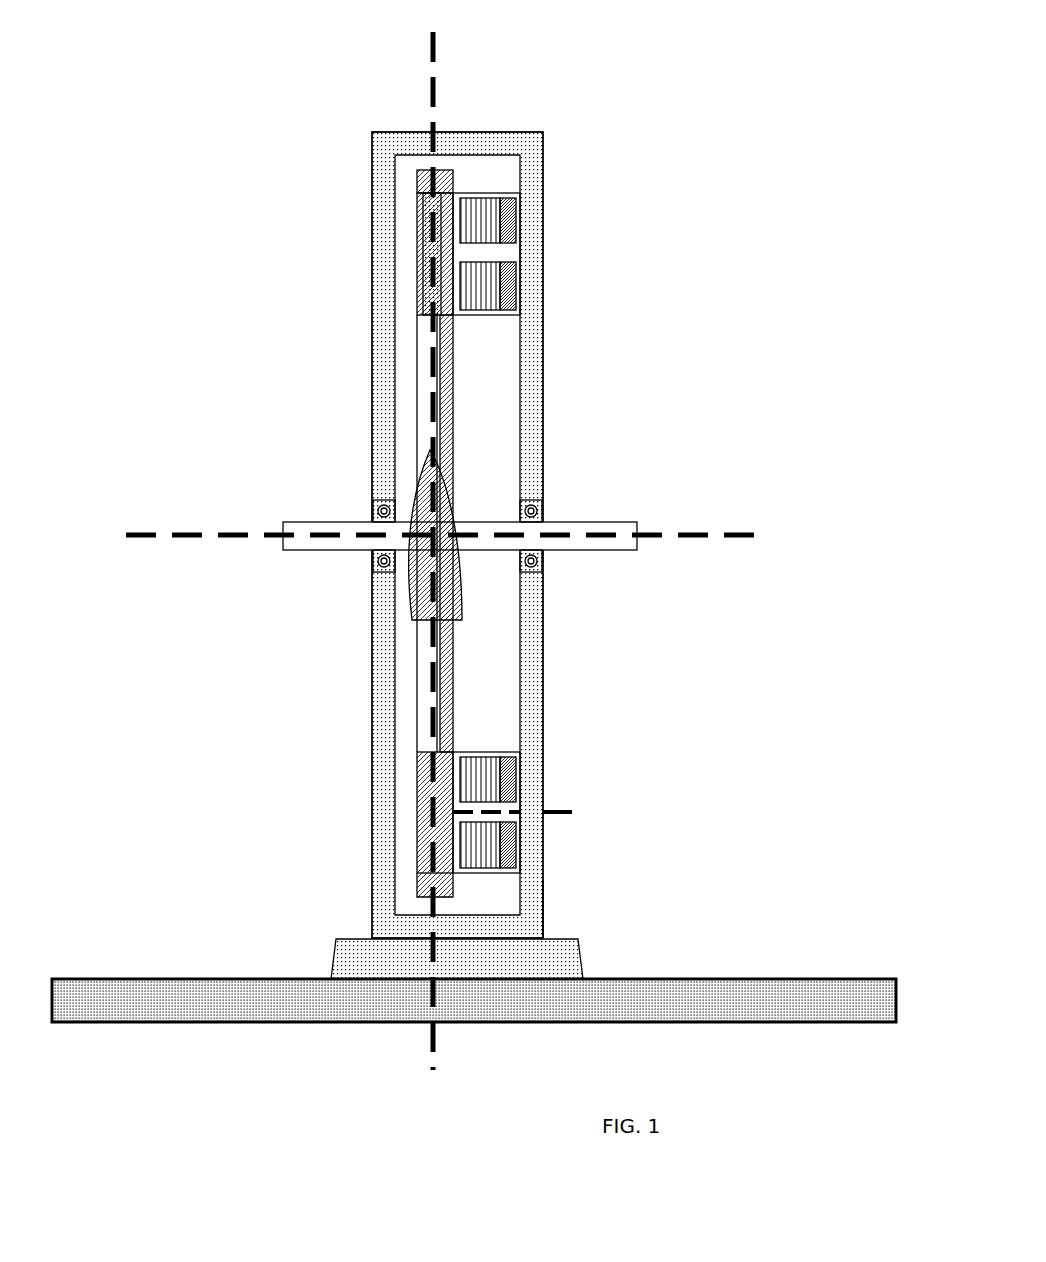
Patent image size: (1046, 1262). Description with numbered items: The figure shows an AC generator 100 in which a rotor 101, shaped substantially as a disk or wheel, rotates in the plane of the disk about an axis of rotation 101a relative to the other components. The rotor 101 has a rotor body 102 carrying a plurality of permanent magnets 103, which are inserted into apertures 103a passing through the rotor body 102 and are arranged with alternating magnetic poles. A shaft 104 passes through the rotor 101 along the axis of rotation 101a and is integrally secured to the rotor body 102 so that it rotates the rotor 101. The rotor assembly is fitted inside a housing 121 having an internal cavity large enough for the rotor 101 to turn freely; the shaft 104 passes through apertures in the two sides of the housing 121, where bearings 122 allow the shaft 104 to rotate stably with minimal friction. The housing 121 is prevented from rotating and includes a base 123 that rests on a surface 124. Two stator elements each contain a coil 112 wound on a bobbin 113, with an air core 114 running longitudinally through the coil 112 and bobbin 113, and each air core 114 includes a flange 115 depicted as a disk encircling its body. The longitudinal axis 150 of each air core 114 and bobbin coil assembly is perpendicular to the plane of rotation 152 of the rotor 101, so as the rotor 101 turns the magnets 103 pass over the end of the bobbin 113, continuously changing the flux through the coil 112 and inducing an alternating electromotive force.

The AC generator 100 is at (540, 112).
The rotor 101 is at (408, 340).
The axis of rotation 101a is at (150, 537).
The rotor body 102 is at (425, 380).
The permanent magnet 103 is at (425, 250).
The aperture 103a is at (462, 322).
The shaft 104 is at (645, 532).
The coil 112 is at (490, 217).
The bobbin 113 is at (512, 762).
The air core 114 is at (530, 258).
The flange 115 is at (520, 845).
The housing 121 is at (550, 923).
The bearing 122 is at (372, 560).
The base 123 is at (330, 957).
The surface 124 is at (133, 979).
The longitudinal axis 150 is at (572, 812).
The plane of rotation 152 is at (432, 65).